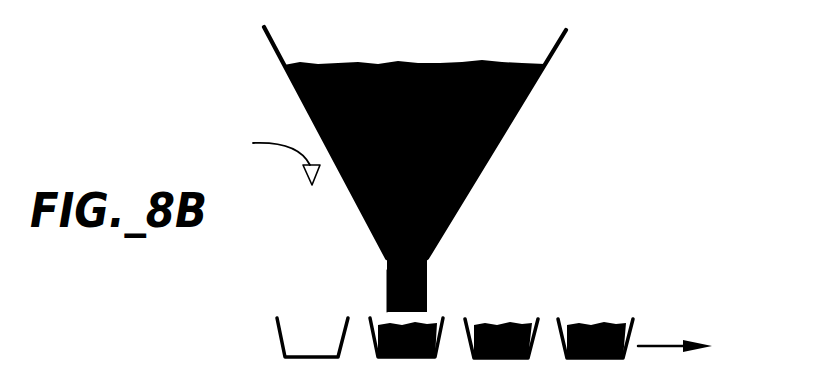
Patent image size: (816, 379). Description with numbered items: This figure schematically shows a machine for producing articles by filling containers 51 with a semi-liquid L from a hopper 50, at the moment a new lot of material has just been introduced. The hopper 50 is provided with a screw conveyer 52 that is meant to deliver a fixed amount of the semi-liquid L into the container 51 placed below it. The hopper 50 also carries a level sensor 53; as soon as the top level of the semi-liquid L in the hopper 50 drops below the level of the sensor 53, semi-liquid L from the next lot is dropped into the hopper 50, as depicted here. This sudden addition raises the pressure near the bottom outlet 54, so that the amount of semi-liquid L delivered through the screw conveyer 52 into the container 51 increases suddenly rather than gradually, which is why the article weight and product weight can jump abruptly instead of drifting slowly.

The hopper 50 is at (545, 80).
The container 51 is at (563, 322).
The screw conveyer 52 is at (427, 268).
The level sensor 53 is at (271, 157).
The bottom outlet 54 is at (387, 283).
The semi-liquid L is at (455, 208).